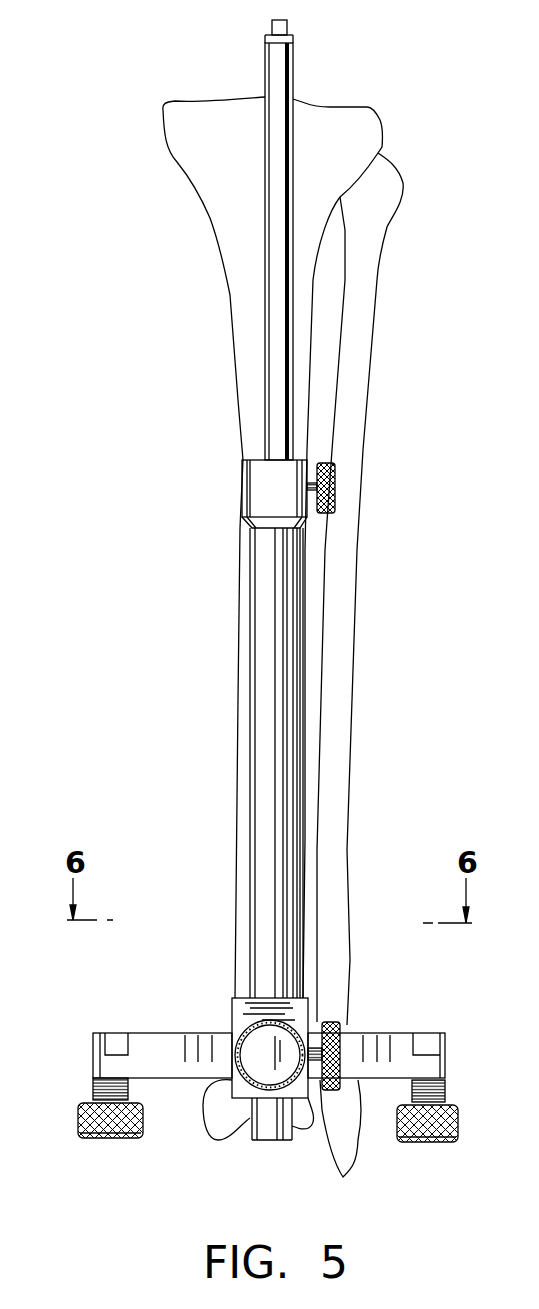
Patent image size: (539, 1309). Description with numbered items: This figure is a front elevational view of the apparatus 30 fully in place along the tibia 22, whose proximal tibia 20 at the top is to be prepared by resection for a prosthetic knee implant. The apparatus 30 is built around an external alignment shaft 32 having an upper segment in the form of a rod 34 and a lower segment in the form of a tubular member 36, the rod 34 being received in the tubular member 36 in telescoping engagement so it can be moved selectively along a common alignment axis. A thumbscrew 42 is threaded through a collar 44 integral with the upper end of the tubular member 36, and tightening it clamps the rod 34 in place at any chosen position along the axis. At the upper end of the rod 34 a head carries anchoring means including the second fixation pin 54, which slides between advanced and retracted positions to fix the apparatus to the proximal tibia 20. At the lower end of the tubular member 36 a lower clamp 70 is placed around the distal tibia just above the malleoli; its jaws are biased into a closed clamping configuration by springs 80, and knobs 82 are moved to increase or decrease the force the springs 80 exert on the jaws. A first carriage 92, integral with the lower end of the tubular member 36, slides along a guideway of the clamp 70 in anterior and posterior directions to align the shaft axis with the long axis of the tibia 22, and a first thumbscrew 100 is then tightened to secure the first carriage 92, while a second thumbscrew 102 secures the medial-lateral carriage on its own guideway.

The proximal tibia 20 is at (362, 122).
The tibia 22 is at (243, 323).
The apparatus 30 is at (244, 764).
The external alignment shaft 32 is at (250, 595).
The rod 34 is at (283, 75).
The tubular member 36 is at (268, 657).
The thumbscrew 42 is at (337, 478).
The collar 44 is at (255, 474).
The second fixation pin 54 is at (284, 24).
The lower clamp 70 is at (178, 1025).
The springs 80 is at (93, 1088).
The knobs 82 is at (93, 1140).
The first carriage 92 is at (240, 1010).
The first thumbscrew 100 is at (338, 1022).
The second thumbscrew 102 is at (265, 1075).